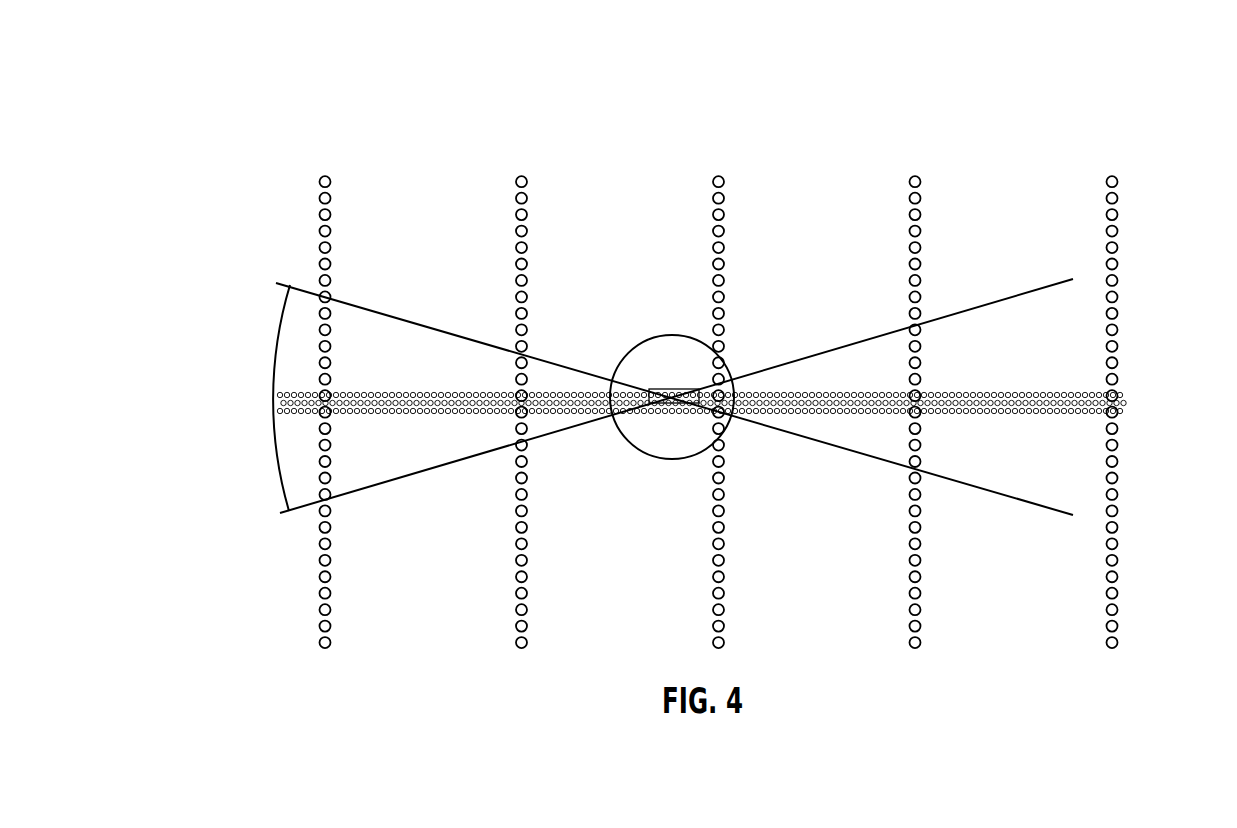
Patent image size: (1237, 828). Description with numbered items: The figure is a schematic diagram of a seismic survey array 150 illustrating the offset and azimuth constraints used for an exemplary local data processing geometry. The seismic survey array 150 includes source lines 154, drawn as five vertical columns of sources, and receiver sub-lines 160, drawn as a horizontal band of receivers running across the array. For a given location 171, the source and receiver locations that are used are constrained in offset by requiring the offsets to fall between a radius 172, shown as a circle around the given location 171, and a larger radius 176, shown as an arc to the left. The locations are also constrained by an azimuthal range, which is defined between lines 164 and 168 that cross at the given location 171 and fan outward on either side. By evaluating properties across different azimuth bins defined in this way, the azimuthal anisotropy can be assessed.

The seismic survey array 150 is at (1083, 105).
The source lines 154 is at (719, 394).
The receiver sub-lines 160 is at (740, 384).
The line 164 is at (674, 383).
The line 168 is at (653, 418).
The given location 171 is at (640, 434).
The radius 172 is at (668, 376).
The radius 176 is at (238, 397).